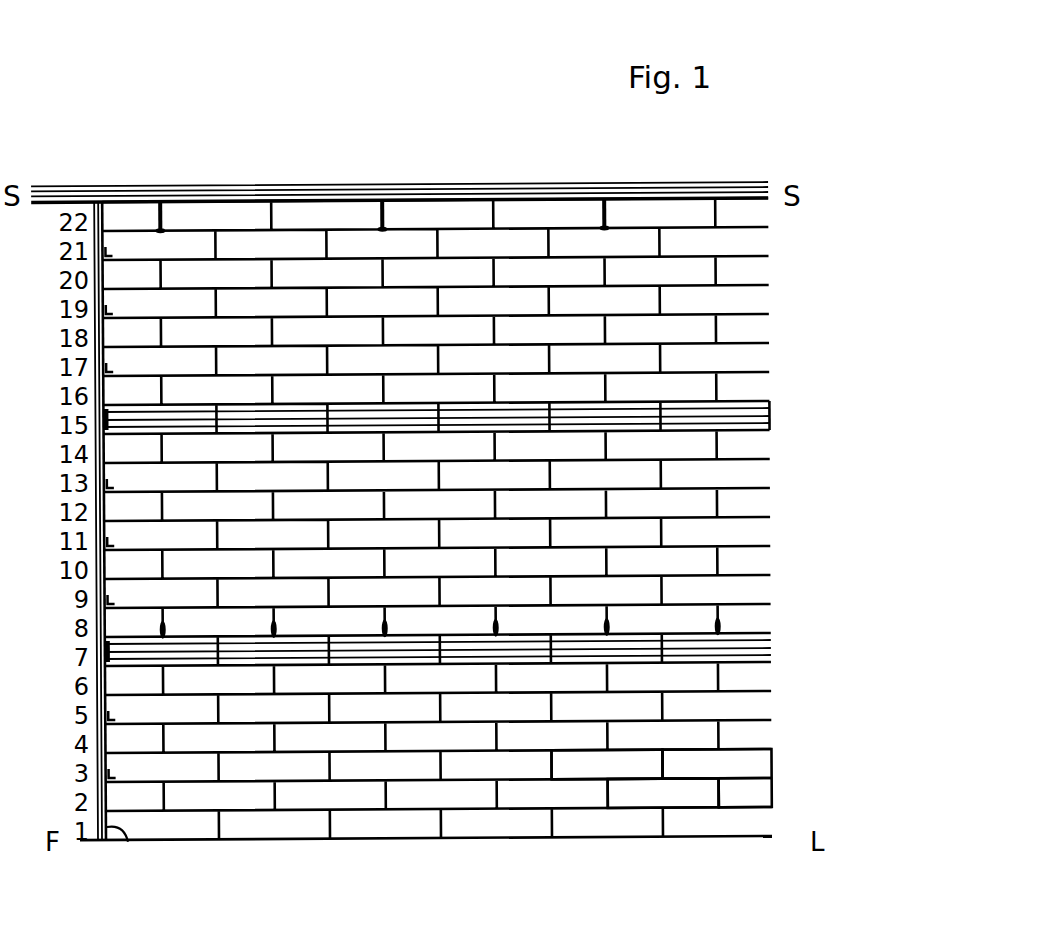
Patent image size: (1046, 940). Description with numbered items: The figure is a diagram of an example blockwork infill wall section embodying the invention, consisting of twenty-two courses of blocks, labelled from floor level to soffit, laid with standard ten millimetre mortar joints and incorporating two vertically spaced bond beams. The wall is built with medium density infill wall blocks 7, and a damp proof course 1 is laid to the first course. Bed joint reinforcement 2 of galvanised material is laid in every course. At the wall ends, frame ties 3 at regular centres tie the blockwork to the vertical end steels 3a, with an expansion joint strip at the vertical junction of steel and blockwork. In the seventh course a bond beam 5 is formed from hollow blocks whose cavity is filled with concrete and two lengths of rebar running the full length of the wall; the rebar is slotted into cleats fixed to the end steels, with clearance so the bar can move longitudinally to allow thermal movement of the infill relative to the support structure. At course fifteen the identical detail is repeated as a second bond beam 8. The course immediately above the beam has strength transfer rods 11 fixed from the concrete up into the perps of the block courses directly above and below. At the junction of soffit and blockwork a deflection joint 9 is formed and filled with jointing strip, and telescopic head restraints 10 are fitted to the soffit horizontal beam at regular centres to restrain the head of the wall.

The damp proof course 1 is at (628, 806).
The bed joint reinforcement 2 is at (755, 774).
The frame ties 3 is at (118, 486).
The vertical end steels 3a is at (128, 842).
The seventh course bond beam 5 is at (233, 636).
The infill wall blocks 7 is at (603, 768).
The fifteenth course bond beam 8 is at (293, 408).
The deflection joint 9 is at (62, 206).
The telescopic head restraints 10 is at (386, 233).
The strength transfer rods 11 is at (286, 631).